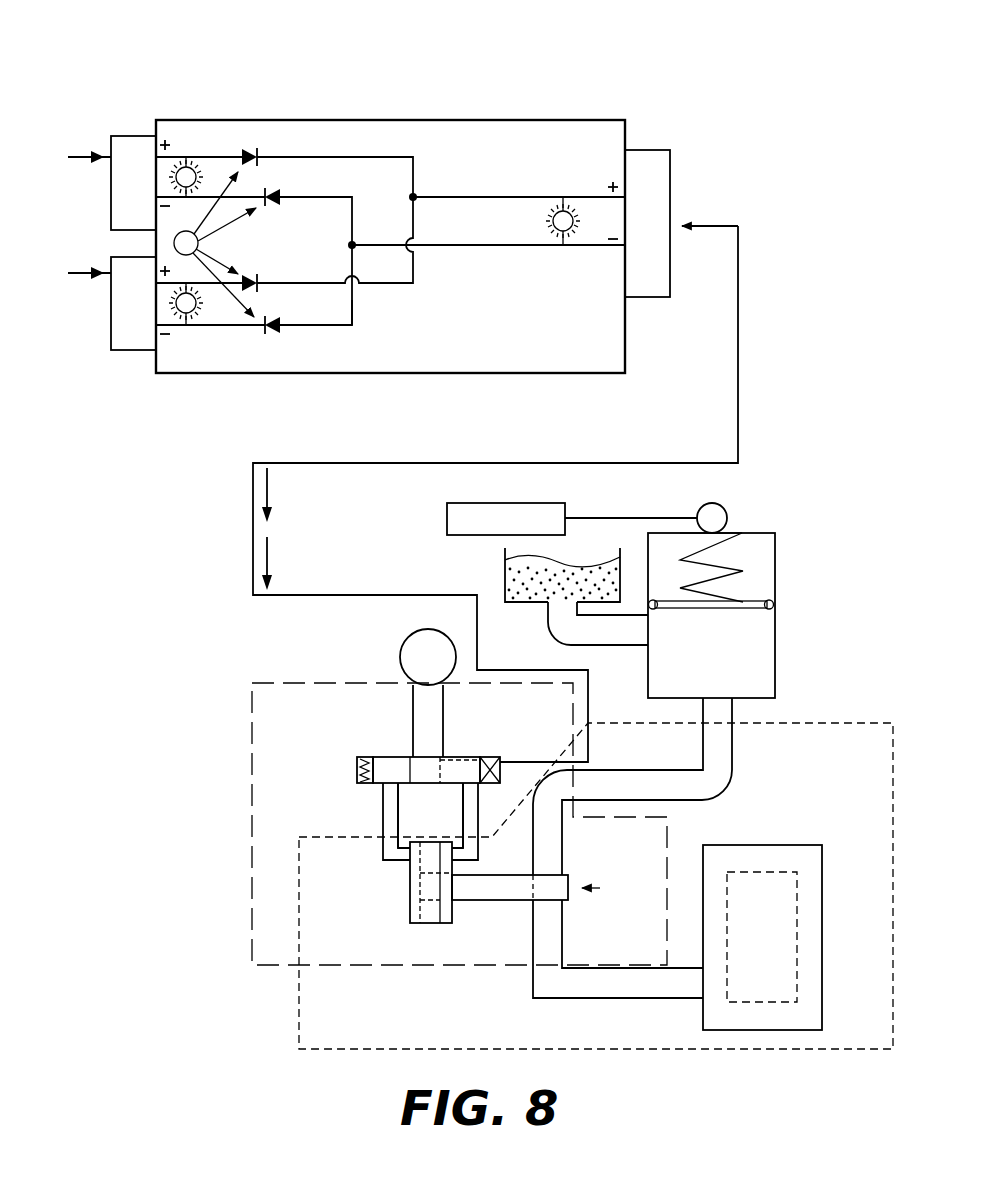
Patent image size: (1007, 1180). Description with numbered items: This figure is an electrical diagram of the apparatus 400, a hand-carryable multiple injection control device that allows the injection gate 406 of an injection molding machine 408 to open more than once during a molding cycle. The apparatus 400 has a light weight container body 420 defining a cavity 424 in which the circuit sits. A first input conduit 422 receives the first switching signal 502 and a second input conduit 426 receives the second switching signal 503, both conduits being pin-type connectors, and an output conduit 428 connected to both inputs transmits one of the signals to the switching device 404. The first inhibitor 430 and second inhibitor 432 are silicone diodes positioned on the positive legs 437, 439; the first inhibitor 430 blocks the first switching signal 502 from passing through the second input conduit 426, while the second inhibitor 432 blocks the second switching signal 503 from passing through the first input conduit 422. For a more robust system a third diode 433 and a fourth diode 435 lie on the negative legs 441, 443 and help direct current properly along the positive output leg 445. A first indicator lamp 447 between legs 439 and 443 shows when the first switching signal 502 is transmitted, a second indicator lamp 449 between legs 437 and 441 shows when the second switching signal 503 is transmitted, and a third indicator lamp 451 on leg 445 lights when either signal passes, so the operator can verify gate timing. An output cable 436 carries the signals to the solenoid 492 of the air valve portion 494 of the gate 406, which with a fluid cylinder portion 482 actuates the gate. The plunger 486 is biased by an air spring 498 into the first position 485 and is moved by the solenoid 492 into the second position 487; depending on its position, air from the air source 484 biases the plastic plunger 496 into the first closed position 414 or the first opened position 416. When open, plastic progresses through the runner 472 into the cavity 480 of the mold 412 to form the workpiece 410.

The apparatus 400 is at (555, 34).
The body 420 is at (467, 110).
The cavity 424 is at (509, 141).
The output conduit 428 is at (641, 150).
The first input conduit 422 is at (131, 137).
The second input conduit 426 is at (131, 350).
The first switching signal 502 is at (86, 163).
The second switching signal 503 is at (88, 266).
The second inhibitor 432 is at (248, 152).
The fourth diode 435 is at (276, 193).
The positive leg 437 is at (282, 284).
The third diode 433 is at (282, 333).
The first inhibitor 430 is at (250, 276).
The positive leg 439 is at (391, 157).
The negative leg 443 is at (336, 197).
The negative leg 441 is at (335, 326).
The positive output leg 445 is at (506, 197).
The first indicator lamp 447 is at (188, 164).
The second indicator lamp 449 is at (188, 318).
The third indicator lamp 451 is at (550, 221).
The output cable 436 is at (252, 566).
The injection molding machine 408 is at (849, 499).
The air source 484 is at (410, 636).
The air valve portion 494 is at (530, 714).
The second position 487 is at (377, 757).
The solenoid 492 is at (498, 757).
The air spring 498 is at (357, 778).
The plunger 486 is at (398, 787).
The first position 485 is at (463, 808).
The plastic plunger 496 is at (428, 924).
The first opened position 416 is at (521, 901).
The first closed position 414 is at (564, 901).
The runner or gate 472 is at (608, 770).
The fluid cylinder portion 482 is at (655, 854).
The switching device 404 is at (248, 709).
The injection gate 406 is at (234, 917).
The mold 412 is at (889, 716).
The cavity 480 is at (867, 847).
The workpiece 410 is at (797, 940).